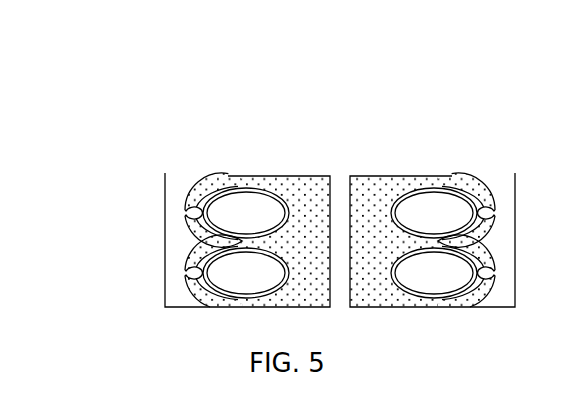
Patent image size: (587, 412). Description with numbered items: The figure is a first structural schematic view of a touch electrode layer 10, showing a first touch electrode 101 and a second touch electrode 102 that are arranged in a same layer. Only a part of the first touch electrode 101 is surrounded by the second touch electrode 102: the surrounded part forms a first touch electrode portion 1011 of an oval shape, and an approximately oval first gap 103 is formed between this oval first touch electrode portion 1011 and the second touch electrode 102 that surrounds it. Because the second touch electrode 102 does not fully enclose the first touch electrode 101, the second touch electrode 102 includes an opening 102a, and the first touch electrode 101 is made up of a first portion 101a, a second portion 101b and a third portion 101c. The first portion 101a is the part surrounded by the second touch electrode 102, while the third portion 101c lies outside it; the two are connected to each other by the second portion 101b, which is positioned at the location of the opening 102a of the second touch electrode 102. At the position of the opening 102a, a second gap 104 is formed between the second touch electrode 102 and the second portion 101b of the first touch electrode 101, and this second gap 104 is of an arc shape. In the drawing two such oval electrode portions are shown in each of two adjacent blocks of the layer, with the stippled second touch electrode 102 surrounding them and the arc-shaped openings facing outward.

The touch electrode layer 10 is at (287, 169).
The first touch electrode 101 is at (168, 221).
The first portion 101a is at (157, 152).
The first touch electrode portion 1011 is at (238, 207).
The second portion 101b is at (186, 213).
The third portion 101c is at (183, 237).
The second touch electrode 102 is at (303, 189).
The opening 102a is at (494, 214).
The first gap 103 is at (252, 188).
The second gap 104 is at (475, 205).